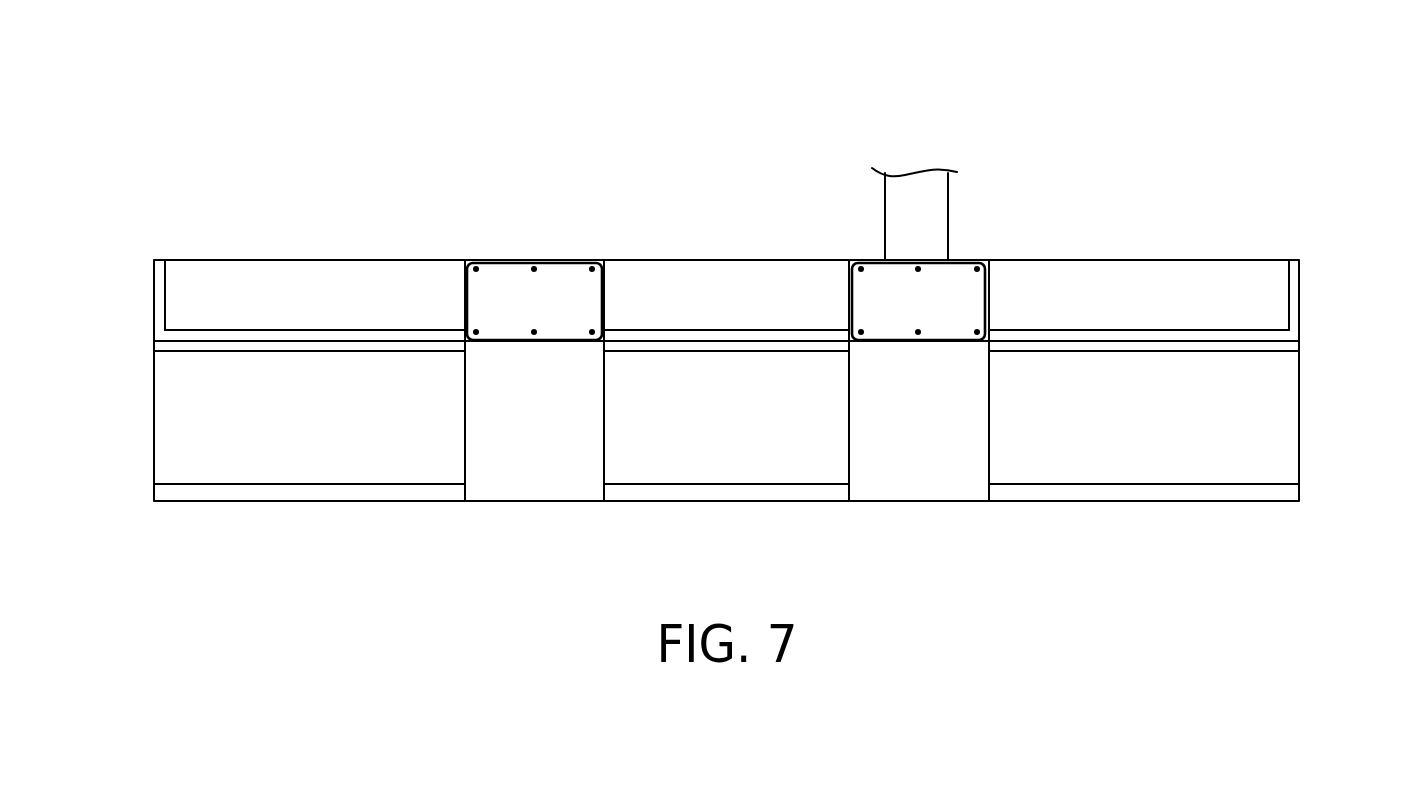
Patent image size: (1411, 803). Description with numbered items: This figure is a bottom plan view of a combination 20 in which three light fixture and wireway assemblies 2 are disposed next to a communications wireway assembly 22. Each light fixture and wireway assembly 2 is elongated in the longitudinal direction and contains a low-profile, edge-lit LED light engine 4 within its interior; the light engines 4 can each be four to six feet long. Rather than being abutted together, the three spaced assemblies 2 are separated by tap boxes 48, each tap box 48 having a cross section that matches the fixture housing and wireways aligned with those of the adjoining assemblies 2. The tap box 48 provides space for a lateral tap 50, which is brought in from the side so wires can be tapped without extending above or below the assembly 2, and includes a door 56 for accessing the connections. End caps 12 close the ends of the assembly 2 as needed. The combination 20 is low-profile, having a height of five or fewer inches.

The light fixture and wireway assembly 2 is at (270, 258).
The light engine 4 is at (357, 270).
The end cap 12 is at (155, 298).
The combination 20 is at (1322, 317).
The communications wireway assembly 22 is at (195, 410).
The tap box 48 is at (558, 297).
The lateral tap 50 is at (918, 195).
The door 56 is at (502, 297).